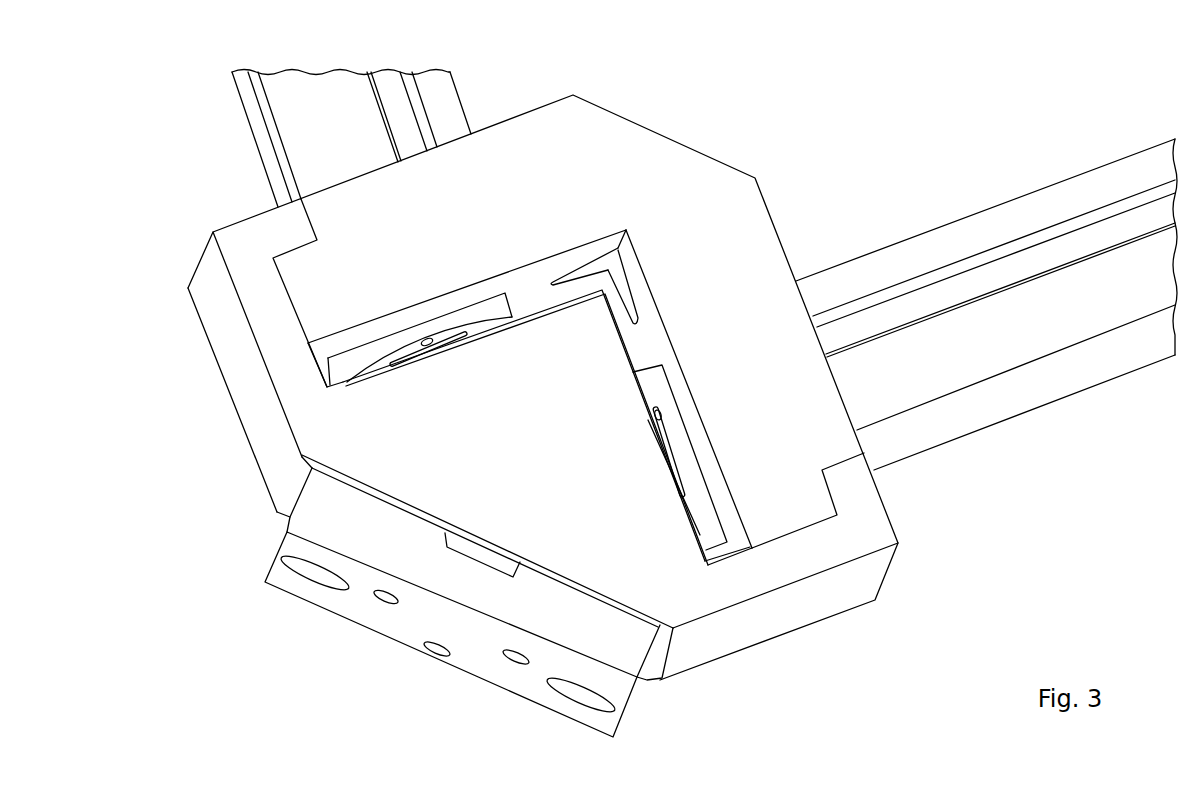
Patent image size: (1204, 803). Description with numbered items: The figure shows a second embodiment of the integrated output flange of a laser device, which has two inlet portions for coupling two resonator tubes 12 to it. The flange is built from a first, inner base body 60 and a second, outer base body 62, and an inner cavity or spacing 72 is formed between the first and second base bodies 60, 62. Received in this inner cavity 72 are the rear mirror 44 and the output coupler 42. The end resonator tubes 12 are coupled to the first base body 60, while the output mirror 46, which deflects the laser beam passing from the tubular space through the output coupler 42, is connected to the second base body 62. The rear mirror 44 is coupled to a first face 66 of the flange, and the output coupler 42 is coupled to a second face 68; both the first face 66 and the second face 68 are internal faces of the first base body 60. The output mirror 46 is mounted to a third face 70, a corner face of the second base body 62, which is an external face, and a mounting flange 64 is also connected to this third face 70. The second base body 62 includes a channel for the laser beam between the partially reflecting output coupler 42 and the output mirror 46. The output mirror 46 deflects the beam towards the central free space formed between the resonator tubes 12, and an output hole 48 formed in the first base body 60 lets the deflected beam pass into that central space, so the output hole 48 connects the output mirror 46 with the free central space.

The resonator tube 12 is at (306, 126).
The output coupler 42 is at (713, 523).
The rear mirror 44 is at (348, 364).
The output mirror 46 is at (480, 555).
The output hole 48 is at (617, 277).
The first base body 60 is at (567, 180).
The second base body 62 is at (514, 461).
The mounting flange 64 is at (538, 627).
The first face 66 is at (538, 278).
The second face 68 is at (657, 333).
The third face 70 is at (652, 655).
The inner cavity 72 is at (517, 298).